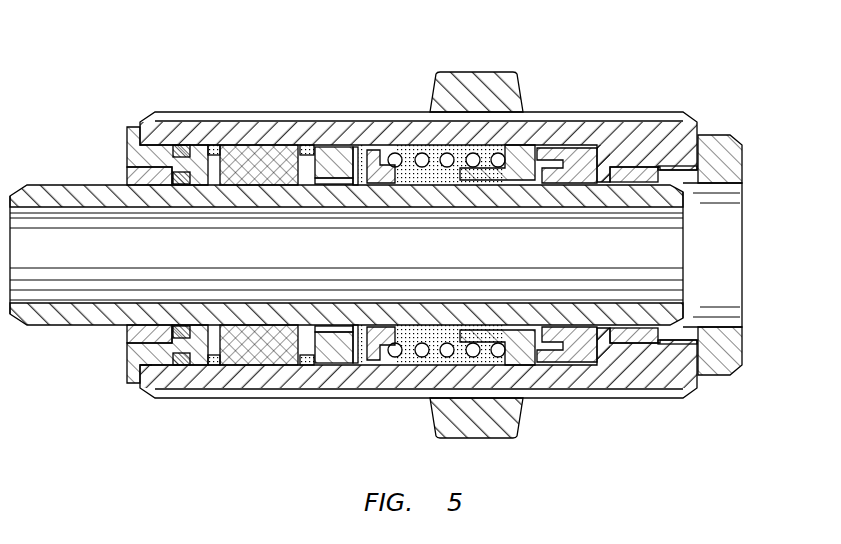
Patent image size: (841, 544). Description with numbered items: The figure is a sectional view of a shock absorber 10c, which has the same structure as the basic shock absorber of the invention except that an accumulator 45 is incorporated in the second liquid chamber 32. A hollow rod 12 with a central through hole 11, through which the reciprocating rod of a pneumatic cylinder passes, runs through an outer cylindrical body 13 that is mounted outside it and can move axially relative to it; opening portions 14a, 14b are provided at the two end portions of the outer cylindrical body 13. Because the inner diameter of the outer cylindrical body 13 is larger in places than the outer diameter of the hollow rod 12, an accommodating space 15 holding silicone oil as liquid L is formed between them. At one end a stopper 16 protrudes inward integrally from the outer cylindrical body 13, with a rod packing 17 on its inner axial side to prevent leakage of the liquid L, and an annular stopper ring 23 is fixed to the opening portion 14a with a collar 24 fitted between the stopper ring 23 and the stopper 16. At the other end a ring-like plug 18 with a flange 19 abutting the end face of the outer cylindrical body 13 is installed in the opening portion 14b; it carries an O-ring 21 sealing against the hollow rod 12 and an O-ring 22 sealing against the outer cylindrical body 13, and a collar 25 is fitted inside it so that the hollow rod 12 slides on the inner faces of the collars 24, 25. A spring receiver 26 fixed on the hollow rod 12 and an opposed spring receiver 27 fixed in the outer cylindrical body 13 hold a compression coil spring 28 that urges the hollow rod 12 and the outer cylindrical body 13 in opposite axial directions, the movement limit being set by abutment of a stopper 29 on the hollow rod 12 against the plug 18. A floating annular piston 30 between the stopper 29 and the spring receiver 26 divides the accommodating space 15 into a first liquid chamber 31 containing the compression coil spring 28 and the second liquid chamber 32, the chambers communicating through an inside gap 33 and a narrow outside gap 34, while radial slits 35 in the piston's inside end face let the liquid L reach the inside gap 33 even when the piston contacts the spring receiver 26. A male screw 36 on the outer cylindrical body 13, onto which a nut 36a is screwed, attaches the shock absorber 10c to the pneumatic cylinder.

The shock absorber 10c is at (703, 74).
The through hole 11 is at (643, 207).
The hollow rod 12 is at (44, 190).
The outer cylindrical body 13 is at (262, 130).
The opening portion 14a is at (680, 345).
The opening portion 14b is at (147, 364).
The accommodating space 15 is at (405, 330).
The stopper 16 is at (607, 334).
The rod packing 17 is at (567, 363).
The plug 18 is at (133, 153).
The flange 19 is at (127, 373).
The O-ring 21 is at (187, 184).
The O-ring 22 is at (183, 145).
The stopper ring 23 is at (720, 145).
The collar 24 is at (633, 172).
The collar 25 is at (127, 332).
The spring receiver 26 is at (372, 160).
The spring receiver 27 is at (520, 152).
The compression coil spring 28 is at (450, 172).
The stopper 29 is at (214, 366).
The annular piston 30 is at (335, 152).
The first liquid chamber 31 is at (452, 363).
The second liquid chamber 32 is at (306, 147).
The inside gap 33 is at (355, 365).
The outside gap 34 is at (343, 341).
The slits 35 is at (340, 160).
The male screw 36 is at (592, 114).
The nut 36a is at (487, 85).
The accumulator 45 is at (260, 366).
The liquid L is at (407, 365).